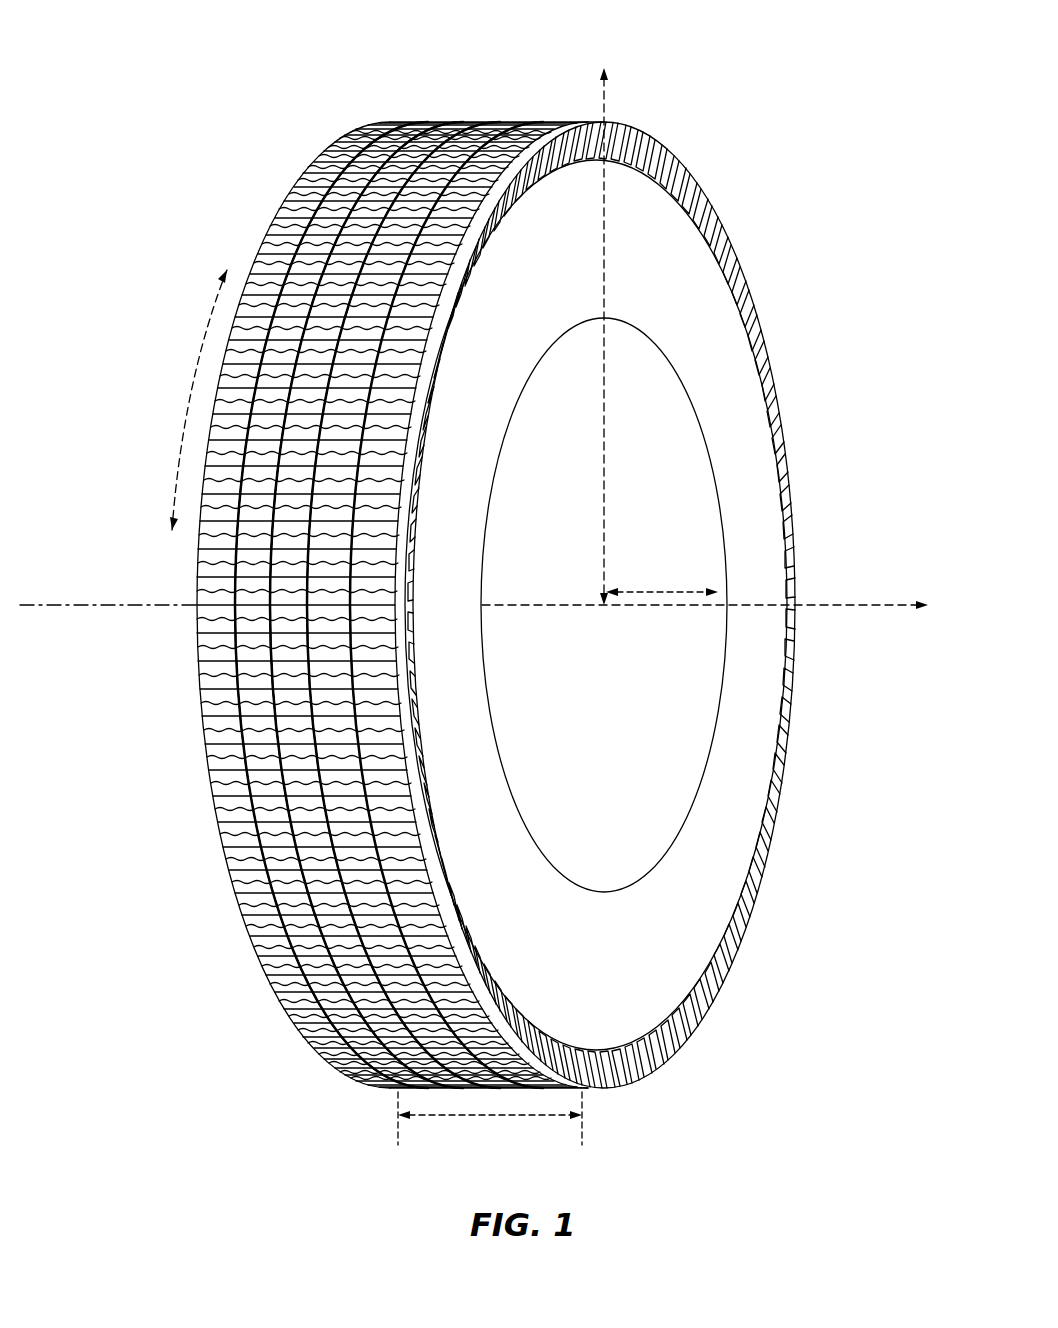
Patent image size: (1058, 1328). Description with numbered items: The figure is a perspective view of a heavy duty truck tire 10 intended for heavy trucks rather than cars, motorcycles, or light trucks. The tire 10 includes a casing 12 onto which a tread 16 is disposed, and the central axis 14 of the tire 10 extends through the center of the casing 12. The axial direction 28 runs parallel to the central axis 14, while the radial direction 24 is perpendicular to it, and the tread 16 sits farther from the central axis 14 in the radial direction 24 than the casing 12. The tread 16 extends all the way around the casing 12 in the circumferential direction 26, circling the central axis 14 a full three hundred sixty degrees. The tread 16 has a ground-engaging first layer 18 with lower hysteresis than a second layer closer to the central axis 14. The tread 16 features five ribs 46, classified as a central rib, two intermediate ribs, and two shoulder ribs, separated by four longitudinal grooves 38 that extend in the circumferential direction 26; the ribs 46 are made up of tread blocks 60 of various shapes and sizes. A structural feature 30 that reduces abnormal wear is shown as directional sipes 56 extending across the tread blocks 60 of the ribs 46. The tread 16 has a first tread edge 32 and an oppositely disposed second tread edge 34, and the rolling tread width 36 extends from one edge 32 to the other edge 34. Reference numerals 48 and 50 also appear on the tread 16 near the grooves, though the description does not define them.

The tire 10 is at (487, 552).
The casing 12 is at (722, 314).
The central axis 14 is at (850, 610).
The tread 16 is at (378, 566).
The first layer 18 is at (293, 695).
The radial direction 24 is at (608, 105).
The circumferential direction 26 is at (190, 387).
The axial direction 28 is at (667, 590).
The structural feature 30 is at (237, 553).
The first tread edge 32 is at (318, 1040).
The second tread edge 34 is at (523, 1028).
The rolling tread width 36 is at (493, 1117).
The longitudinal grooves 38 is at (320, 210).
The ribs 46 is at (362, 165).
The circumferential groove 48 is at (438, 138).
The circumferential groove 50 is at (413, 153).
The directional sipes 56 is at (268, 787).
The tread blocks 60 is at (330, 630).